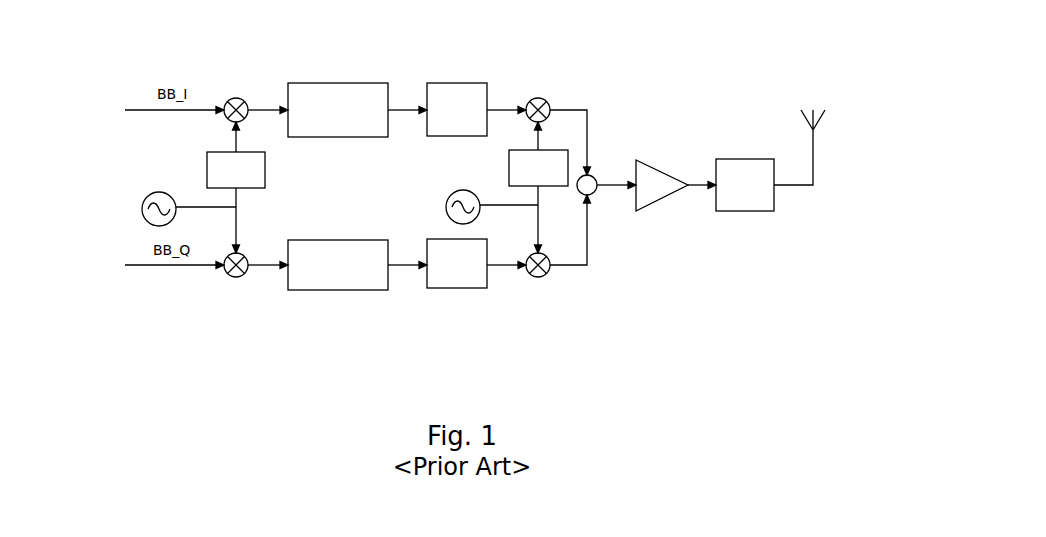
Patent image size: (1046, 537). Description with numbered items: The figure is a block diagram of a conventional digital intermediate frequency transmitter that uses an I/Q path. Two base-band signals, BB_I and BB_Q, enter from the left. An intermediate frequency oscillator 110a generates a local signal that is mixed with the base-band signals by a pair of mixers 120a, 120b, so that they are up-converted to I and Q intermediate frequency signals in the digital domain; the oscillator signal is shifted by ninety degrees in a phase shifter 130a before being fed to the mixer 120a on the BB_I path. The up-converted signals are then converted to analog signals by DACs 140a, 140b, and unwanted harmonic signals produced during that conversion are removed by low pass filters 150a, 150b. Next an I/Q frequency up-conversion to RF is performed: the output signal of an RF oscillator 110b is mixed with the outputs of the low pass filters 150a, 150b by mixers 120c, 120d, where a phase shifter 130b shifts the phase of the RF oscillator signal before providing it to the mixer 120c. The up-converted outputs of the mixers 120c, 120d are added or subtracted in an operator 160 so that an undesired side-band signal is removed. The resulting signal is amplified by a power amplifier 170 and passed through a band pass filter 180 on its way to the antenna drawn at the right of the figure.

The intermediate frequency oscillator 110a is at (155, 192).
The RF oscillator 110b is at (450, 195).
The mixer 120a is at (240, 99).
The mixer 120b is at (243, 277).
The mixer 120c is at (543, 99).
The mixer 120d is at (545, 277).
The phase shifter 130a is at (265, 180).
The phase shifter 130b is at (568, 150).
The DAC 140a is at (345, 83).
The DAC 140b is at (345, 290).
The low pass filter 150a is at (460, 83).
The low pass filter 150b is at (460, 288).
The operator 160 is at (594, 193).
The power amplifier 170 is at (650, 160).
The band pass filter 180 is at (745, 159).